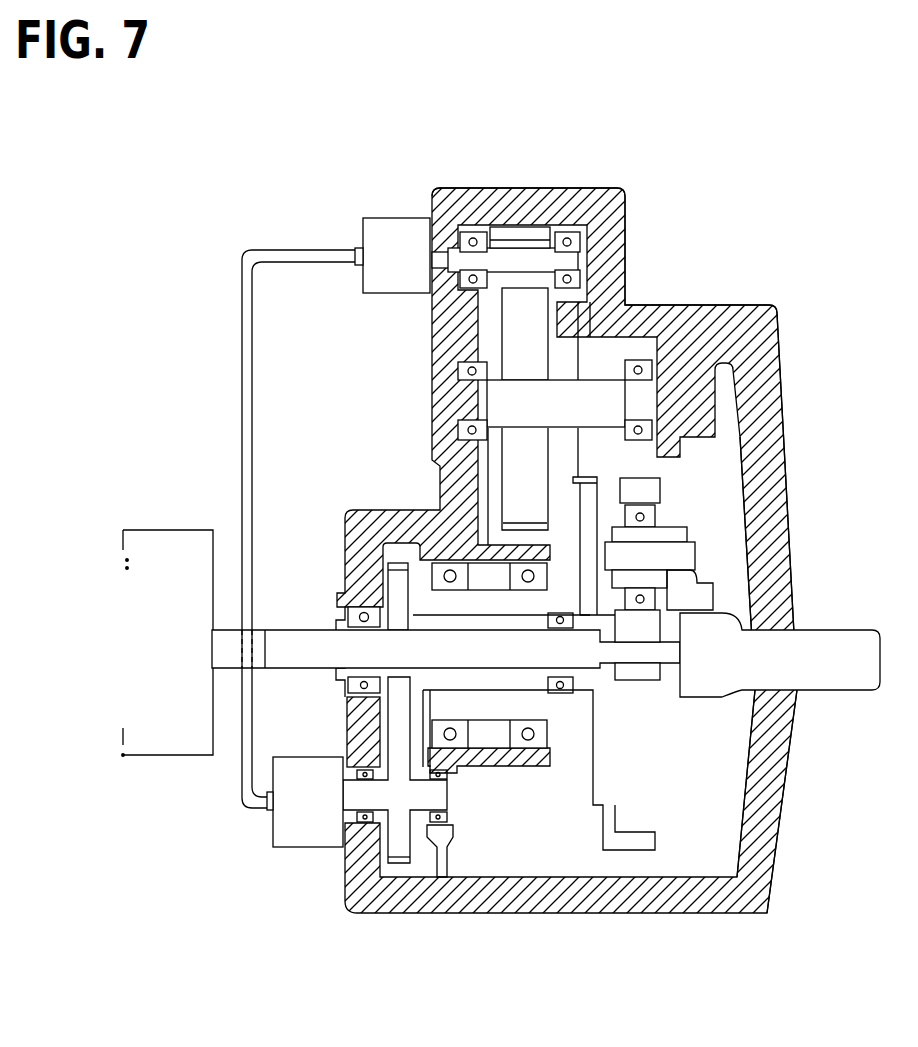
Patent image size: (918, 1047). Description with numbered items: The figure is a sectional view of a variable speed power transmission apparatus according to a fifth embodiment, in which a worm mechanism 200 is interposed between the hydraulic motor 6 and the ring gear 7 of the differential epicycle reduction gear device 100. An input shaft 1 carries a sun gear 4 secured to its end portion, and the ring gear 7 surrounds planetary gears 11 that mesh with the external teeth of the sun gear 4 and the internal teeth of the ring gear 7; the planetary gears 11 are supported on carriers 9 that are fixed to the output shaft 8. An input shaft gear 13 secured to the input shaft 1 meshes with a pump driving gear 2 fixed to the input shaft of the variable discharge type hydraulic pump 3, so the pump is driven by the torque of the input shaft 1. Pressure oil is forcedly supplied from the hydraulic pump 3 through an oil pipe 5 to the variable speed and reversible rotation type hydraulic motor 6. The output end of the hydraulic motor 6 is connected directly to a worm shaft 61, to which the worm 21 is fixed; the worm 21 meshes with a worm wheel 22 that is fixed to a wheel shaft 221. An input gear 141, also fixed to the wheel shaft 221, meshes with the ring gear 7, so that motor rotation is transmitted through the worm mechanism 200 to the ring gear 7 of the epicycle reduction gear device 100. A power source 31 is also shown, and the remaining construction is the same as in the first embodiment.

The input shaft 1 is at (527, 665).
The pump driving gear 2 is at (400, 848).
The variable discharge type hydraulic pump 3 is at (300, 828).
The sun gear 4 is at (640, 688).
The oil pipe 5 is at (262, 251).
The variable speed and reversible rotation type hydraulic motor 6 is at (385, 228).
The ring gear 7 is at (748, 420).
The output shaft 8 is at (824, 672).
The carriers 9 is at (707, 590).
The planetary gears 11 is at (652, 470).
The input shaft gear 13 is at (400, 598).
The worm 21 is at (527, 228).
The worm wheel 22 is at (521, 318).
The power source 31 is at (163, 546).
The worm shaft 61 is at (488, 258).
The differential epicycle reduction gear device 100 is at (695, 513).
The input gear 141 is at (607, 362).
The worm mechanism 200 is at (585, 193).
The wheel shaft 221 is at (506, 400).